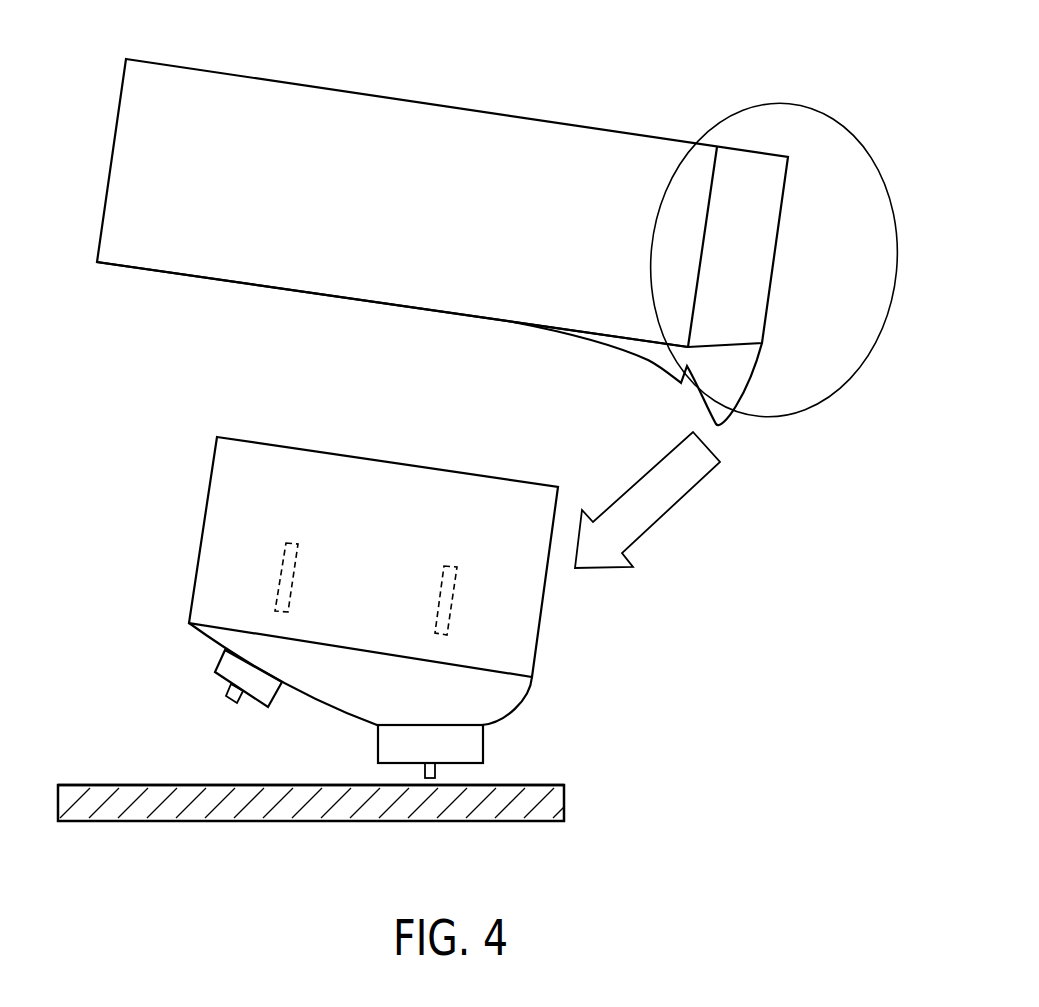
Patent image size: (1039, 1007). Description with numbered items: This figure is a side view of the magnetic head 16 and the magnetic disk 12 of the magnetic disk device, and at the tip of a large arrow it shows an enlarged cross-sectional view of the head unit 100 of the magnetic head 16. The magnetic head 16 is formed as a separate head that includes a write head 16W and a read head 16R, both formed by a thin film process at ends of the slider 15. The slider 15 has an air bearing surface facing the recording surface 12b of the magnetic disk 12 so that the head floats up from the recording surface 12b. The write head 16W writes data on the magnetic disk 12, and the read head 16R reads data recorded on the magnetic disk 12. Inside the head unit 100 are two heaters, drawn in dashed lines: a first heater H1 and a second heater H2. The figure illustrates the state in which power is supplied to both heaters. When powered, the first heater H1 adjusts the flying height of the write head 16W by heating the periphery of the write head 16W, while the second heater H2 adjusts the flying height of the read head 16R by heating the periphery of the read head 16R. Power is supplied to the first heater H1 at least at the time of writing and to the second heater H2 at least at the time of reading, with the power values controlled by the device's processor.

The magnetic head 16 is at (506, 84).
The slider 15 is at (343, 298).
The head unit 100 is at (860, 142).
The write head 16W is at (483, 745).
The read head 16R is at (235, 707).
The first heater H1 is at (460, 580).
The second heater H2 is at (297, 560).
The magnetic disk 12 is at (565, 800).
The recording surface 12b is at (297, 792).